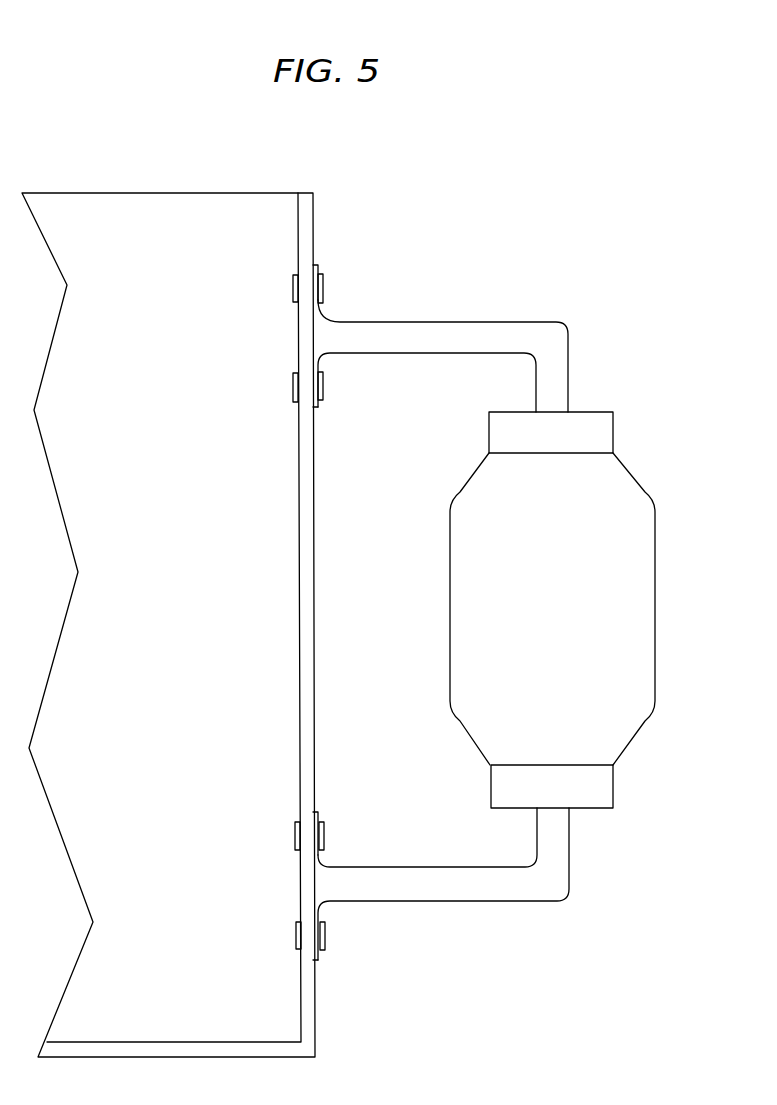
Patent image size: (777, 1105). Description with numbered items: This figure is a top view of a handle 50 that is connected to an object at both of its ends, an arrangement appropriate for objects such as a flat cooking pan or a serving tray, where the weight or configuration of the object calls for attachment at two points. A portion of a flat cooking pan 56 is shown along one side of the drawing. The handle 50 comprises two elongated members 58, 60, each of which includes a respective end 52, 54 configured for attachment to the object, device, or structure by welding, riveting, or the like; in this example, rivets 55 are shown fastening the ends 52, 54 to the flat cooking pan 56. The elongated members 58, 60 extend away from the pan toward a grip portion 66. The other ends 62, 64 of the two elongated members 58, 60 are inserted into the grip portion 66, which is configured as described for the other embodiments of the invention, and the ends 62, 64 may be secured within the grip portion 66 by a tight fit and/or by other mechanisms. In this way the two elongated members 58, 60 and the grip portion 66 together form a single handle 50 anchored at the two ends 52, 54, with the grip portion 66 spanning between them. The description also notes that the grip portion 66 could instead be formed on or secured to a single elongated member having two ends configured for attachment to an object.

The handle 50 is at (588, 613).
The end 52 is at (345, 289).
The end 54 is at (347, 955).
The rivets 55 is at (293, 290).
The flat cooking pan 56 is at (138, 193).
The elongated member 58 is at (472, 321).
The elongated member 60 is at (380, 867).
The end 62 is at (587, 378).
The end 64 is at (590, 842).
The grip portion 66 is at (655, 562).